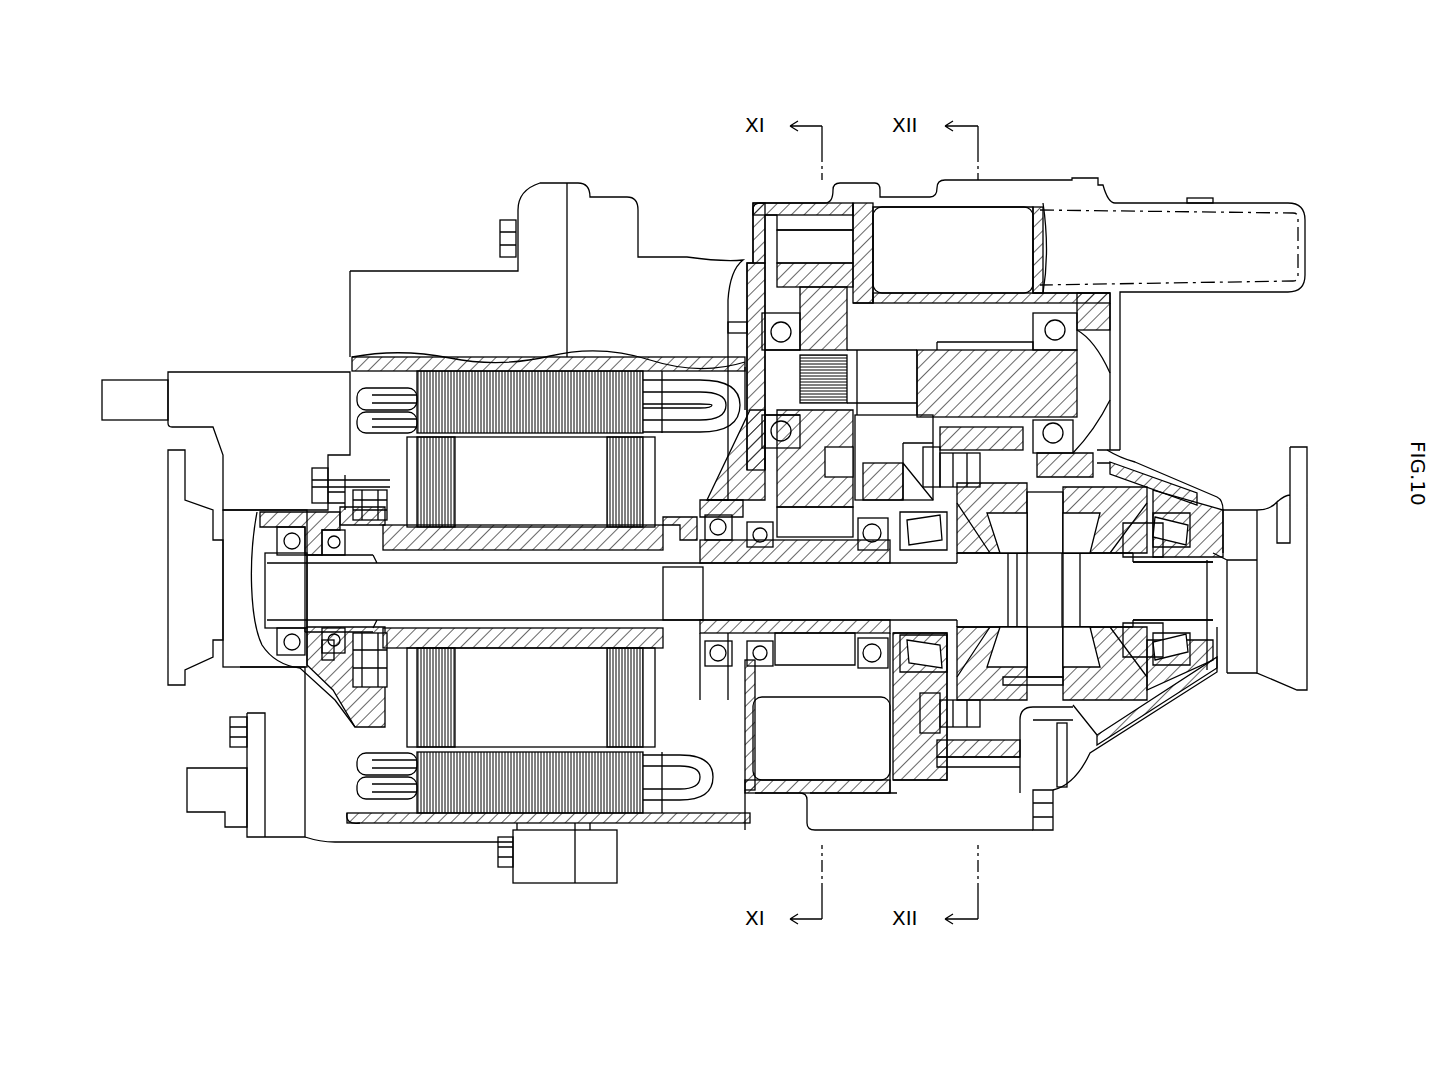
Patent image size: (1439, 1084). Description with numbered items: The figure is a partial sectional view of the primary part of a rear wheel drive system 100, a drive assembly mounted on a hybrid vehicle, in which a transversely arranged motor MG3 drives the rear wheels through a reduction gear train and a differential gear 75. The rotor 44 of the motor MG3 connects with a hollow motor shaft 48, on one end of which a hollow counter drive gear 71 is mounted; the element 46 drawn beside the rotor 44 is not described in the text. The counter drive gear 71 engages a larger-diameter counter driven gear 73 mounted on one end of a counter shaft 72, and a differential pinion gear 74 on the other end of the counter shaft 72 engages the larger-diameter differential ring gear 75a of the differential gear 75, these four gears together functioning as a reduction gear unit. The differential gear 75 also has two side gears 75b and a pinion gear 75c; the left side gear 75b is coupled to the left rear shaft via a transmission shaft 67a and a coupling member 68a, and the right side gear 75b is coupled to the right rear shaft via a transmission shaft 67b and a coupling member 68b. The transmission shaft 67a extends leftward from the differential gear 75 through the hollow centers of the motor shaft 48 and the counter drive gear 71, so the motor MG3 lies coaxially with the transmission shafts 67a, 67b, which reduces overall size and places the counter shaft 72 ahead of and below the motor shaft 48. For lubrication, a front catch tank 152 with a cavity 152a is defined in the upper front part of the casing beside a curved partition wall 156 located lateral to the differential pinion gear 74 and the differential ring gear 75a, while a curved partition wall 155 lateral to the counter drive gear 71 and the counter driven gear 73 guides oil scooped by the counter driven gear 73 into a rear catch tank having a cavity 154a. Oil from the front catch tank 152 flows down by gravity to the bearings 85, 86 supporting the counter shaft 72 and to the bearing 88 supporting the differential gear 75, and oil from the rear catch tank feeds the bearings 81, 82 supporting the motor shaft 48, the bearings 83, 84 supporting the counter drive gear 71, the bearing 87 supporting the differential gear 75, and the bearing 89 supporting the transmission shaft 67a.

The rear wheel drive system 100 is at (339, 210).
The motor MG3 is at (380, 446).
The rotor 44 is at (655, 452).
The rotor shaft 46 is at (650, 800).
The motor shaft 48 is at (680, 525).
The bearing 89 is at (289, 516).
The bearing 82 is at (334, 669).
The coupling member 68a is at (168, 573).
The coupling member 68b is at (1303, 577).
The counter driven gear 73 is at (790, 240).
The partition wall 156 is at (997, 297).
The front catch tank 152 is at (1100, 278).
The cavity 152a is at (918, 242).
The bearing 85 is at (767, 303).
The counter shaft 72 is at (890, 400).
The differential pinion gear 74 is at (985, 345).
The bearing 86 is at (1088, 353).
The bearing 81 is at (721, 677).
The bearing 83 is at (754, 684).
The bearing 84 is at (875, 677).
The transmission shaft 67a is at (690, 655).
The transmission shaft 67b is at (1200, 598).
The partition wall 155 is at (817, 713).
The cavity 154a is at (815, 761).
The counter drive gear 71 is at (833, 663).
The bearing 87 is at (921, 681).
The differential gear 75 is at (1102, 650).
The differential ring gear 75a is at (973, 657).
The side gear 75b is at (1110, 628).
The pinion gear 75c is at (1080, 490).
The bearing 88 is at (1173, 485).